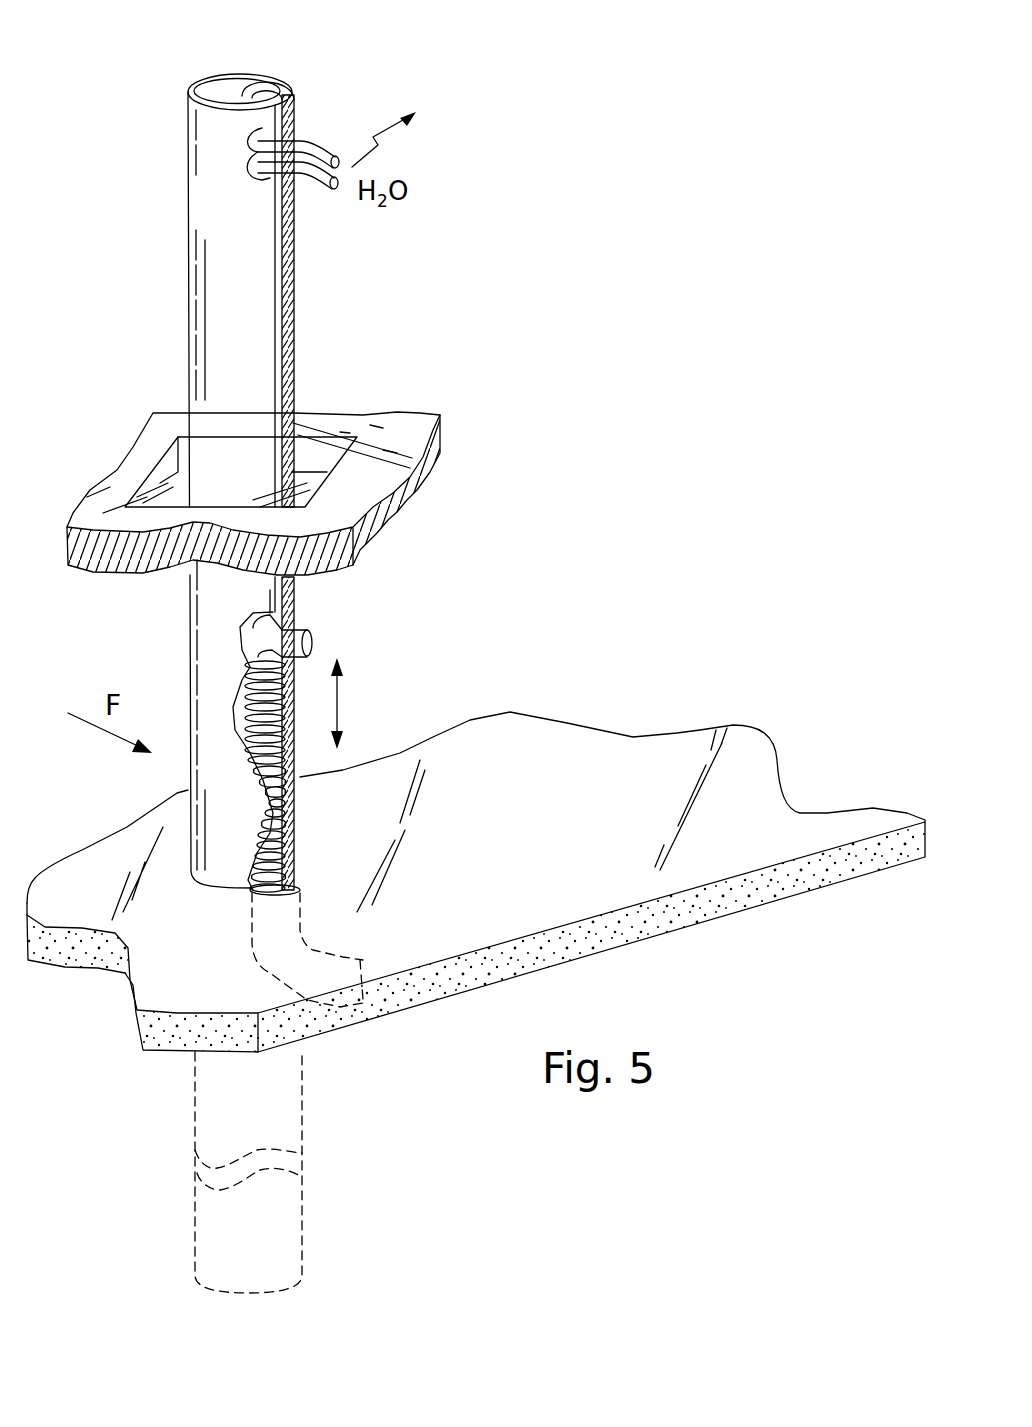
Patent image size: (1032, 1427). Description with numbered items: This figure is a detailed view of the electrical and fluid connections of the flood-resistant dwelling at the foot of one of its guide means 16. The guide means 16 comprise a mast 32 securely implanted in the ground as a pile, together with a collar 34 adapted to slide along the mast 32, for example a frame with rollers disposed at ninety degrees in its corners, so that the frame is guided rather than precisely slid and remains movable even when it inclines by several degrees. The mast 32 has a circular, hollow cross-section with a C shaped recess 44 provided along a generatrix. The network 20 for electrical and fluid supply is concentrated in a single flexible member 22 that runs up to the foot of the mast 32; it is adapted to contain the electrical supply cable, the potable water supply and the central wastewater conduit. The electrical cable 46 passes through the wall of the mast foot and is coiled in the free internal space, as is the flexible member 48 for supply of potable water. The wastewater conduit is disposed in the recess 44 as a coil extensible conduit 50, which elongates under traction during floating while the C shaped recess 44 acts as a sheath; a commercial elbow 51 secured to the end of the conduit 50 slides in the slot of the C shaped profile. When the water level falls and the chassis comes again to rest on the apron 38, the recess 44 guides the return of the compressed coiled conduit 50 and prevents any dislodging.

The guide means 16 is at (326, 458).
The network for electrical and fluid supply 20 is at (358, 947).
The flexible member 22 is at (270, 973).
The mast 32 is at (320, 455).
The collar 34 is at (330, 443).
The apron 38 is at (683, 910).
The C shaped recess 44 is at (282, 107).
The electrical cable 46 is at (312, 148).
The flexible member for supply of potable water 48 is at (322, 190).
The coil extensible conduit 50 is at (245, 690).
The commercial elbow 51 is at (305, 628).